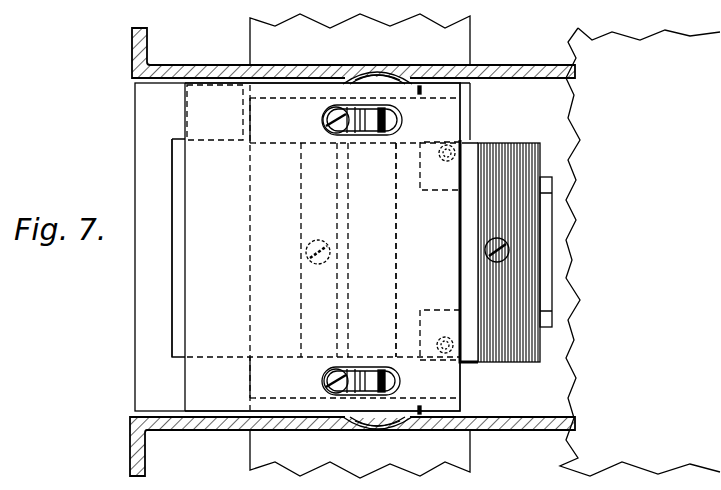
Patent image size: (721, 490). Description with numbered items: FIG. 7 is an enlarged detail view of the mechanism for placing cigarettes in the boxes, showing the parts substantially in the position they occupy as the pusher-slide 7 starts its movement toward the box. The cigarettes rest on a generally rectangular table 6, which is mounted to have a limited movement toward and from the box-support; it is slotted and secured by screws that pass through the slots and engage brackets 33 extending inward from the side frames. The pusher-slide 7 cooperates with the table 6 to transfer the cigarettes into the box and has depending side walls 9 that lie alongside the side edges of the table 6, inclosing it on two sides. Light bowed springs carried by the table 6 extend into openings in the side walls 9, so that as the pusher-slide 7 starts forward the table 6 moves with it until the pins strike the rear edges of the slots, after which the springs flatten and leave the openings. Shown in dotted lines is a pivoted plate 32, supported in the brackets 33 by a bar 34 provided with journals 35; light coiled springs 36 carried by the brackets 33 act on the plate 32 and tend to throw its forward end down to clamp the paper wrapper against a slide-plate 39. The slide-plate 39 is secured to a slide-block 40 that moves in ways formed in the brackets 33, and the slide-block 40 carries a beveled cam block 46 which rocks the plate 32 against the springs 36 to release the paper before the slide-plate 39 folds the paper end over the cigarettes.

The table 6 is at (190, 258).
The pusher-slide 7 is at (640, 252).
The side wall 9 is at (187, 70).
The pivoted plate 32 is at (178, 200).
The bracket 33 is at (360, 246).
The bar 34 is at (396, 270).
The journal 35 is at (398, 122).
The coiled spring 36 is at (440, 251).
The slide-plate 39 is at (297, 247).
The slide-block 40 is at (555, 238).
The cam block 46 is at (300, 283).